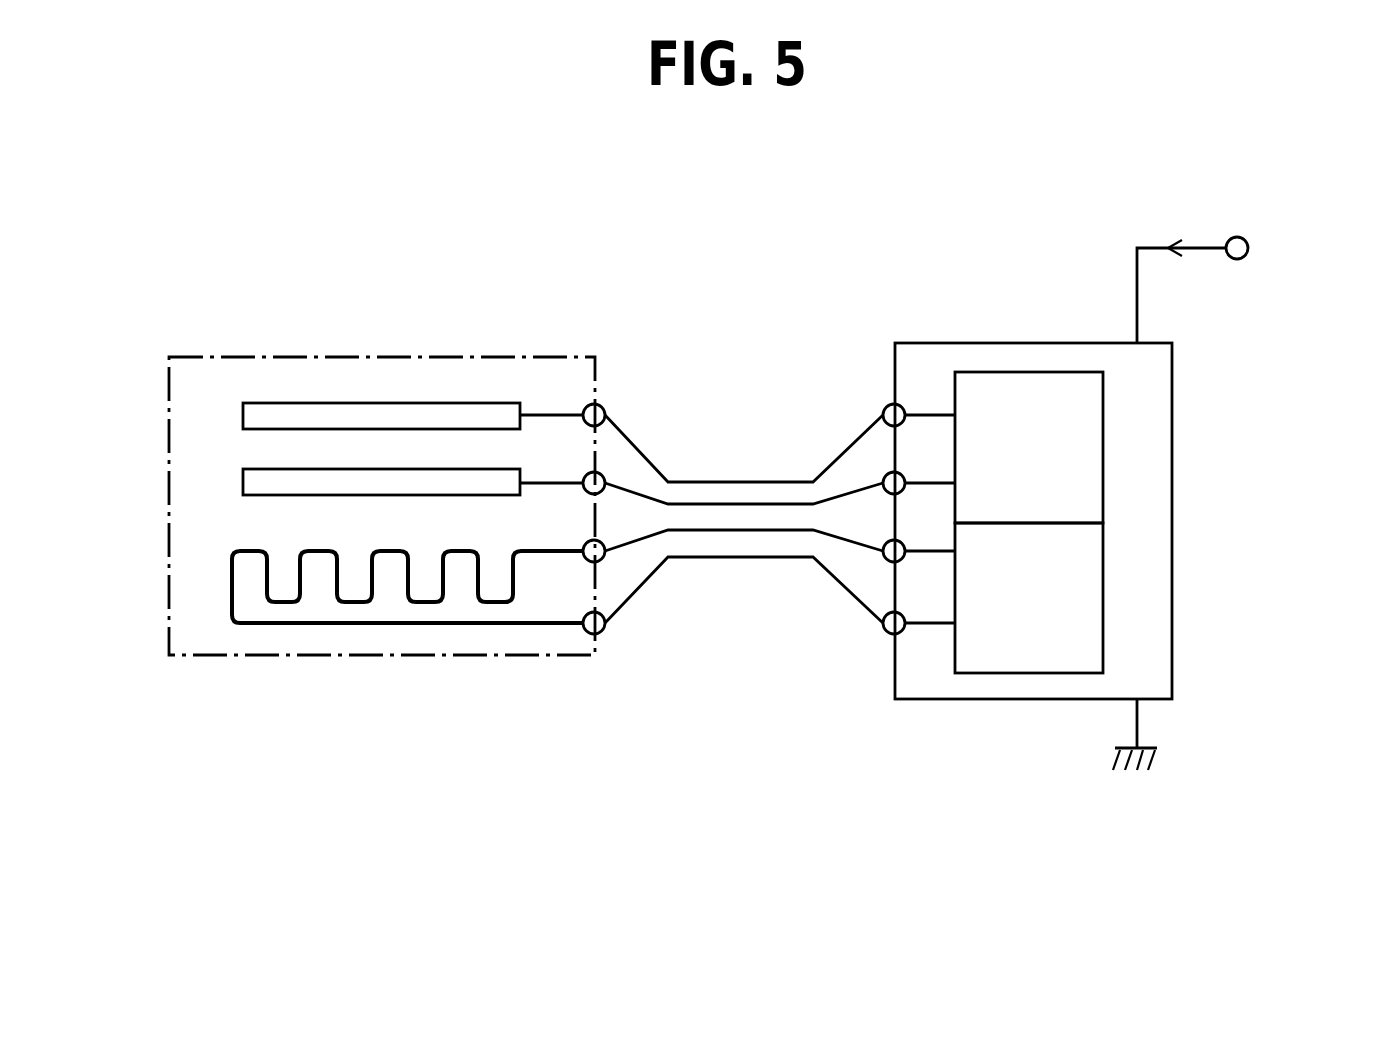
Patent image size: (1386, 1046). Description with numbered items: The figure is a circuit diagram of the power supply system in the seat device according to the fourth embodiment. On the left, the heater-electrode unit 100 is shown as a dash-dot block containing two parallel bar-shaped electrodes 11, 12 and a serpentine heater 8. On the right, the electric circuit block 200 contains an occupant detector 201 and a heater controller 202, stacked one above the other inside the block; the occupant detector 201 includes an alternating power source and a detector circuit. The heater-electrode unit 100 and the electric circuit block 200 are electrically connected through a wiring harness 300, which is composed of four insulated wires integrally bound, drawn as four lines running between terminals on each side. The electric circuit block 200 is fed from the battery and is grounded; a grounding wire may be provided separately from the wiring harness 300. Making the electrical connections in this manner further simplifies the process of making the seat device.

The heater 8 is at (230, 583).
The first electrode 11 is at (398, 412).
The second electrode 12 is at (300, 485).
The heater-electrode unit 100 is at (395, 655).
The electric circuit block 200 is at (1025, 722).
The occupant detector 201 is at (1077, 440).
The heater controller 202 is at (1077, 573).
The wiring harness 300 is at (730, 455).